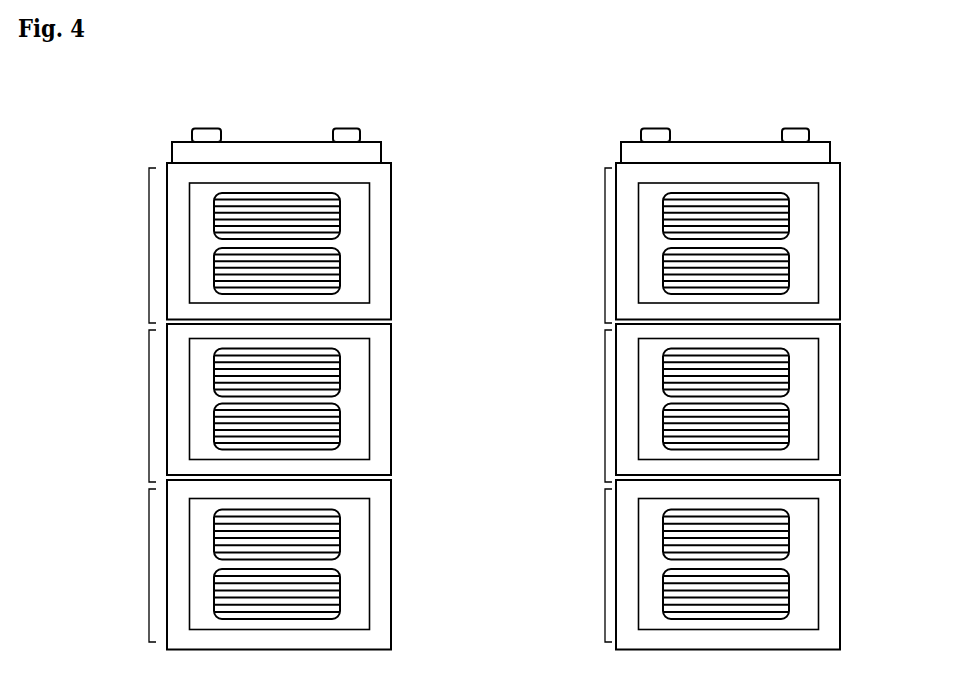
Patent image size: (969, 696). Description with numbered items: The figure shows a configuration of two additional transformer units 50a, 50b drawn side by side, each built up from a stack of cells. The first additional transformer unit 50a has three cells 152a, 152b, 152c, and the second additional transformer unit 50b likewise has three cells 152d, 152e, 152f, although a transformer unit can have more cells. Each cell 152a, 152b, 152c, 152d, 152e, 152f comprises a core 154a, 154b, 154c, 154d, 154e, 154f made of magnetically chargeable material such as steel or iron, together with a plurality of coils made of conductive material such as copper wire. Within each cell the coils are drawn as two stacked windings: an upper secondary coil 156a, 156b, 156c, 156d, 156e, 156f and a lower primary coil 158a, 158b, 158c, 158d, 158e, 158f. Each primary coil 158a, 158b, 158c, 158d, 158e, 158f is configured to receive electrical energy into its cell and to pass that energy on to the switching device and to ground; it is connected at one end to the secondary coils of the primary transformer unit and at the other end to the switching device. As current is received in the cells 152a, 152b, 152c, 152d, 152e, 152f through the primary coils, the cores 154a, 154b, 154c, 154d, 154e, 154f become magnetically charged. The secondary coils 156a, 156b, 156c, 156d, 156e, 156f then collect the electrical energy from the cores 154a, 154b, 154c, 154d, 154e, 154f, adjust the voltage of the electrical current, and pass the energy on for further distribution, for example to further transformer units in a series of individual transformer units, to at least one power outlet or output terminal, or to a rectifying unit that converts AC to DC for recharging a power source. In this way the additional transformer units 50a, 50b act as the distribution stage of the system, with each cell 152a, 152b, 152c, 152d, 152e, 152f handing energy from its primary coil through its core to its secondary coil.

The additional transformer unit 50a is at (250, 90).
The additional transformer unit 50b is at (699, 90).
The cell 152a is at (149, 246).
The cell 152b is at (149, 405).
The cell 152c is at (149, 565).
The cell 152d is at (605, 247).
The cell 152e is at (605, 405).
The cell 152f is at (605, 565).
The core 154a is at (380, 185).
The core 154b is at (381, 333).
The core 154c is at (378, 501).
The core 154d is at (841, 189).
The core 154e is at (830, 352).
The core 154f is at (825, 509).
The secondary coil 156a is at (340, 230).
The secondary coil 156b is at (340, 382).
The secondary coil 156c is at (340, 544).
The secondary coil 156d is at (790, 230).
The secondary coil 156e is at (790, 386).
The secondary coil 156f is at (790, 550).
The primary coil 158a is at (340, 279).
The primary coil 158b is at (340, 436).
The primary coil 158c is at (340, 607).
The primary coil 158d is at (790, 280).
The primary coil 158e is at (790, 436).
The primary coil 158f is at (790, 597).